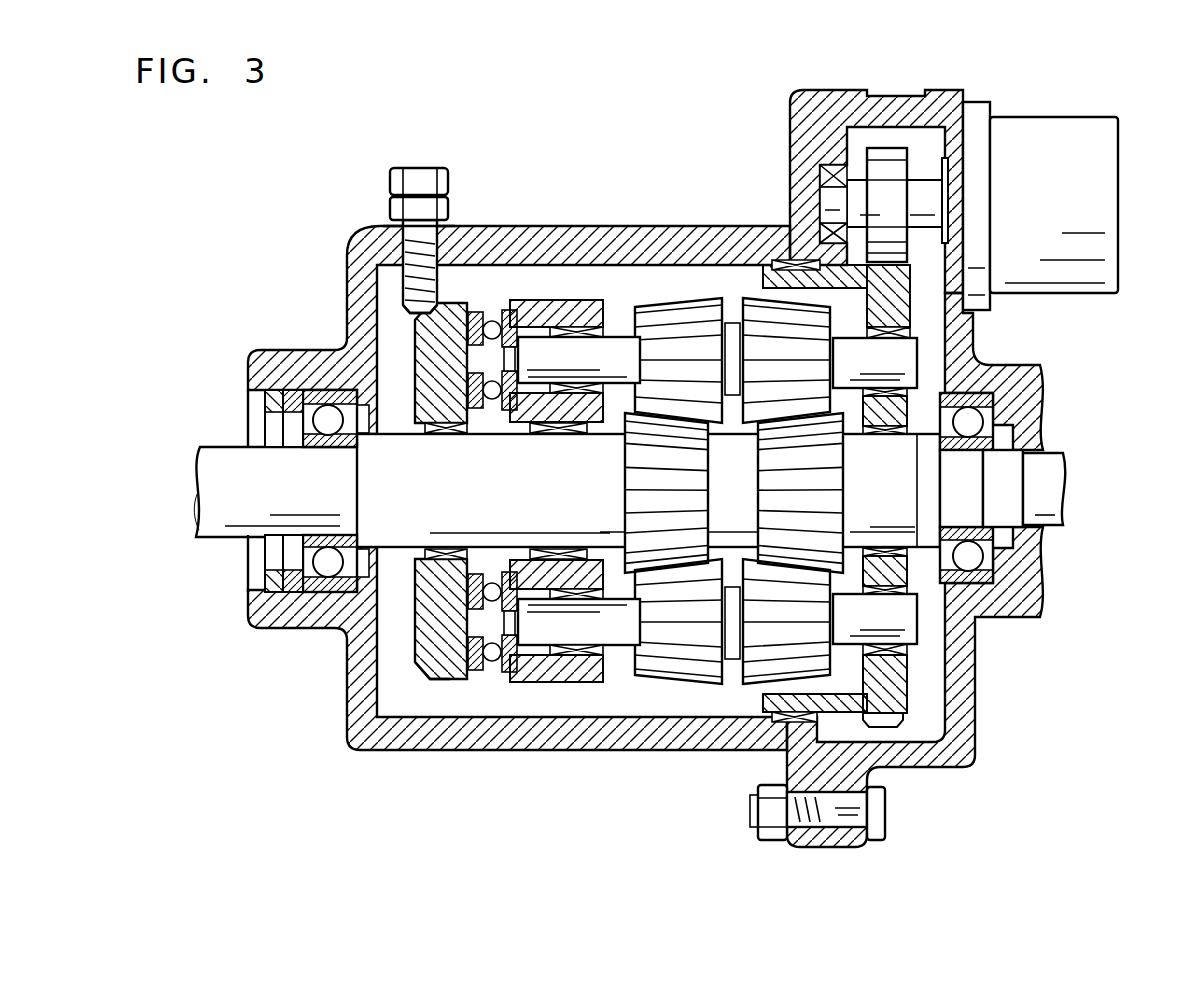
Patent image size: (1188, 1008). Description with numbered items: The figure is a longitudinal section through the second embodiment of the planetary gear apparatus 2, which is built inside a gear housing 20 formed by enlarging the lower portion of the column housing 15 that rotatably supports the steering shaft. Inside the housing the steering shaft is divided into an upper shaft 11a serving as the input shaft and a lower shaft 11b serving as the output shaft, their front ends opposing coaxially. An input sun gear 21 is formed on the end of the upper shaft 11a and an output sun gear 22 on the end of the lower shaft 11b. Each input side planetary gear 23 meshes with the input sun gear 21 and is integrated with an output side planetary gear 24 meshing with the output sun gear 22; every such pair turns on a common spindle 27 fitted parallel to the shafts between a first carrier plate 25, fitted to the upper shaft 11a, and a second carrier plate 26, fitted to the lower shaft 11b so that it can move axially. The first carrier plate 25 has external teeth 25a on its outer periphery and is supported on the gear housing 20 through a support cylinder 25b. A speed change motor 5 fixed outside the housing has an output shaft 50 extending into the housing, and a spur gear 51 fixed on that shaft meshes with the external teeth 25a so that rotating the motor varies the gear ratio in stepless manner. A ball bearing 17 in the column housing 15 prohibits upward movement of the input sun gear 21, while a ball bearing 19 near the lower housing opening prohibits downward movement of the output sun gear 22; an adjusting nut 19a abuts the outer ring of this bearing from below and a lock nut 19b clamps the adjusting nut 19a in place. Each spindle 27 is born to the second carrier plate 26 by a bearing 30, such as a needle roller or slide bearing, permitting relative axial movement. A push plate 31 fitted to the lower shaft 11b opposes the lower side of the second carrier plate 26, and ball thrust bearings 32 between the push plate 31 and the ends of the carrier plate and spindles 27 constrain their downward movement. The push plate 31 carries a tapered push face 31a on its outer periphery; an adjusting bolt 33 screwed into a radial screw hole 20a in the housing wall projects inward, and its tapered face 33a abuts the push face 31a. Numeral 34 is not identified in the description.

The planetary gear apparatus 2 is at (683, 143).
The speed change motor 5 is at (1053, 130).
The upper shaft 11a is at (1060, 462).
The lower shaft 11b is at (215, 453).
The column housing 15 is at (1027, 381).
The ball bearing 17 is at (985, 556).
The ball bearing 19 is at (327, 392).
The adjusting nut 19a is at (297, 593).
The lock nut 19b is at (277, 593).
The gear housing 20 is at (765, 230).
The screw hole 20a is at (405, 247).
The input sun gear 21 is at (833, 482).
The output sun gear 22 is at (633, 481).
The input side planetary gear 23 is at (753, 300).
The output side planetary gear 24 is at (688, 300).
The first carrier plate 25 is at (903, 696).
The external teeth 25a is at (890, 722).
The support cylinder 25b is at (793, 762).
The second carrier plate 26 is at (570, 683).
The spindle 27 is at (917, 352).
The bearing 30 is at (577, 300).
The push plate 31 is at (447, 680).
The push face 31a is at (427, 673).
The ball thrust bearing 32 is at (475, 310).
The adjusting bolt 33 is at (413, 177).
The tapered face 33a is at (410, 316).
The lock nut 34 is at (395, 214).
The output shaft 50 is at (925, 188).
The spur gear 51 is at (887, 147).